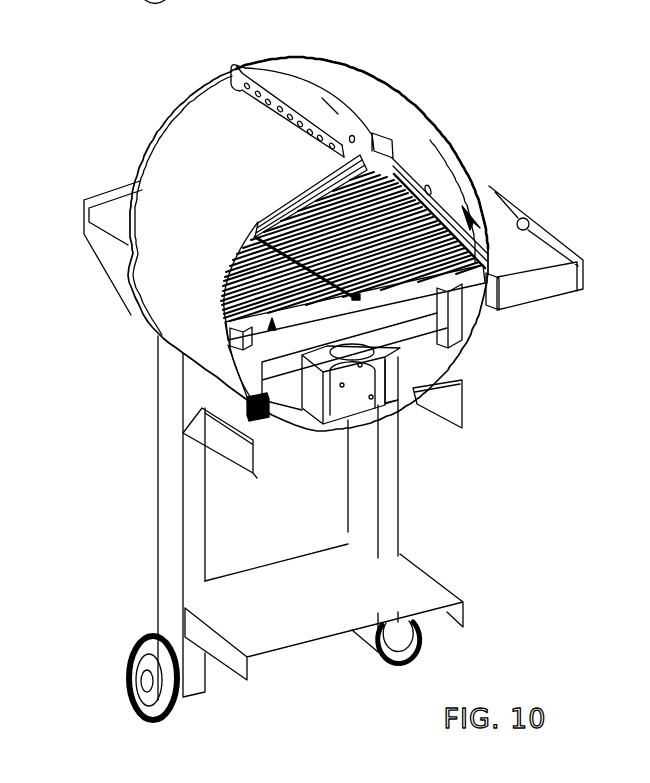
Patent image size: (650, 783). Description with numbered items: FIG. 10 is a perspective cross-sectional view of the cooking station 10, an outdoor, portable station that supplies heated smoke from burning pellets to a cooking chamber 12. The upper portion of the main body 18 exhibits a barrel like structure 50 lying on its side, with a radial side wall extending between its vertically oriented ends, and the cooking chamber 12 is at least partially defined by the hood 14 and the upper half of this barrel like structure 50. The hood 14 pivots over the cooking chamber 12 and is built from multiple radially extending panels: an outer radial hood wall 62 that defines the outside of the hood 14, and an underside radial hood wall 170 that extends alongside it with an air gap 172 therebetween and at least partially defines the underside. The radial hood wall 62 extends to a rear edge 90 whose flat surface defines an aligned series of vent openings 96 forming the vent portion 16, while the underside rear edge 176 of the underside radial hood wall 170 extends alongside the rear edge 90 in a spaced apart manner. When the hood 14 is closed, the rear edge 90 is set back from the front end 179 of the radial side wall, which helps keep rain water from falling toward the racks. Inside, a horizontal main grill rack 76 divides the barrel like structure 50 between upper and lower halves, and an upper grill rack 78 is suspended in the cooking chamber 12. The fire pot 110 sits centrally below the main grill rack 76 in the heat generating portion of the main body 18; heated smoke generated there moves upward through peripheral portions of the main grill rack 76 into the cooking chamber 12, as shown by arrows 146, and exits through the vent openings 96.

The cooking station 10 is at (486, 43).
The cooking chamber 12 is at (449, 194).
The hood 14 is at (363, 102).
The vent portion 16 is at (300, 152).
The main body 18 is at (152, 461).
The barrel like structure 50 is at (150, 150).
The radial hood wall 62 is at (368, 98).
The main grill rack 76 is at (258, 402).
The upper grill rack 78 is at (403, 172).
The rear edge 90 is at (283, 123).
The vent openings 96 is at (262, 100).
The fire pot 110 is at (388, 382).
The arrows 146 is at (232, 340).
The underside radial hood wall 170 is at (456, 172).
The air gap 172 is at (391, 132).
The underside rear edge 176 is at (354, 136).
The front end 179 is at (335, 112).